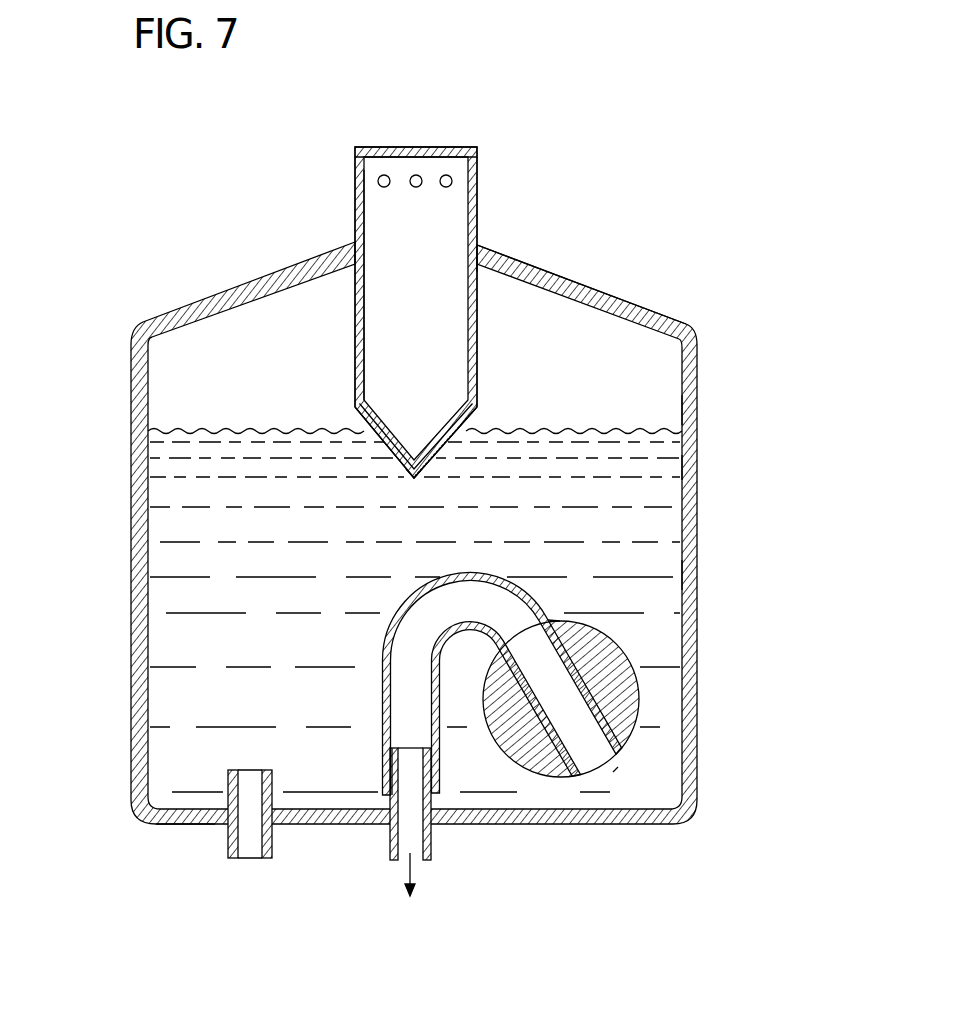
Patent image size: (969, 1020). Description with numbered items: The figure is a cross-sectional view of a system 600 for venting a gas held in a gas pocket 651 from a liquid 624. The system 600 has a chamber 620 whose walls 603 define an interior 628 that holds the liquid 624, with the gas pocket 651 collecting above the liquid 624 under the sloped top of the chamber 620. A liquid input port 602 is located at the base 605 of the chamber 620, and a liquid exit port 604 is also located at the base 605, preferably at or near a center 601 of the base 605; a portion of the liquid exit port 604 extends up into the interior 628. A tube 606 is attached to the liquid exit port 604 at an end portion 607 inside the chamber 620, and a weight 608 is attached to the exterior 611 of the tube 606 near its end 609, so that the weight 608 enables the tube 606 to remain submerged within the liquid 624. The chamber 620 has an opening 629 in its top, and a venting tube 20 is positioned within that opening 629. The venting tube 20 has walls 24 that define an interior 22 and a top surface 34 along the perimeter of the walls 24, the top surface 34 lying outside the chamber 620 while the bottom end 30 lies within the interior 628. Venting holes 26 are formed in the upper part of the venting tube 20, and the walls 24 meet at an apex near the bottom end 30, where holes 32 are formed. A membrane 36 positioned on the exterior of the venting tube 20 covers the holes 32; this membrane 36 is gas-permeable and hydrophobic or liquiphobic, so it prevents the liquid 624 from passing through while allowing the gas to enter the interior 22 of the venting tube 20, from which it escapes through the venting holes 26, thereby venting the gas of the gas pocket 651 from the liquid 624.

The system 600 is at (444, 549).
The chamber 620 is at (130, 482).
The gas pocket 651 is at (600, 320).
The interior 628 is at (665, 413).
The walls 603 is at (690, 465).
The liquid 624 is at (648, 572).
The base 605 is at (165, 828).
The venting tube 20 is at (417, 320).
The top surface 34 is at (445, 148).
The walls 24 is at (356, 183).
The interior 22 is at (380, 304).
The opening 629 is at (478, 264).
The venting holes 26 is at (386, 188).
The holes 32 is at (452, 420).
The membrane 36 is at (455, 445).
The bottom end 30 is at (437, 468).
The tube 606 is at (383, 655).
The exterior 611 is at (632, 715).
The weight 608 is at (575, 620).
The end 609 is at (611, 770).
The center 601 is at (433, 826).
The end portion 607 is at (443, 750).
The liquid input port 602 is at (274, 848).
The liquid exit port 604 is at (386, 849).